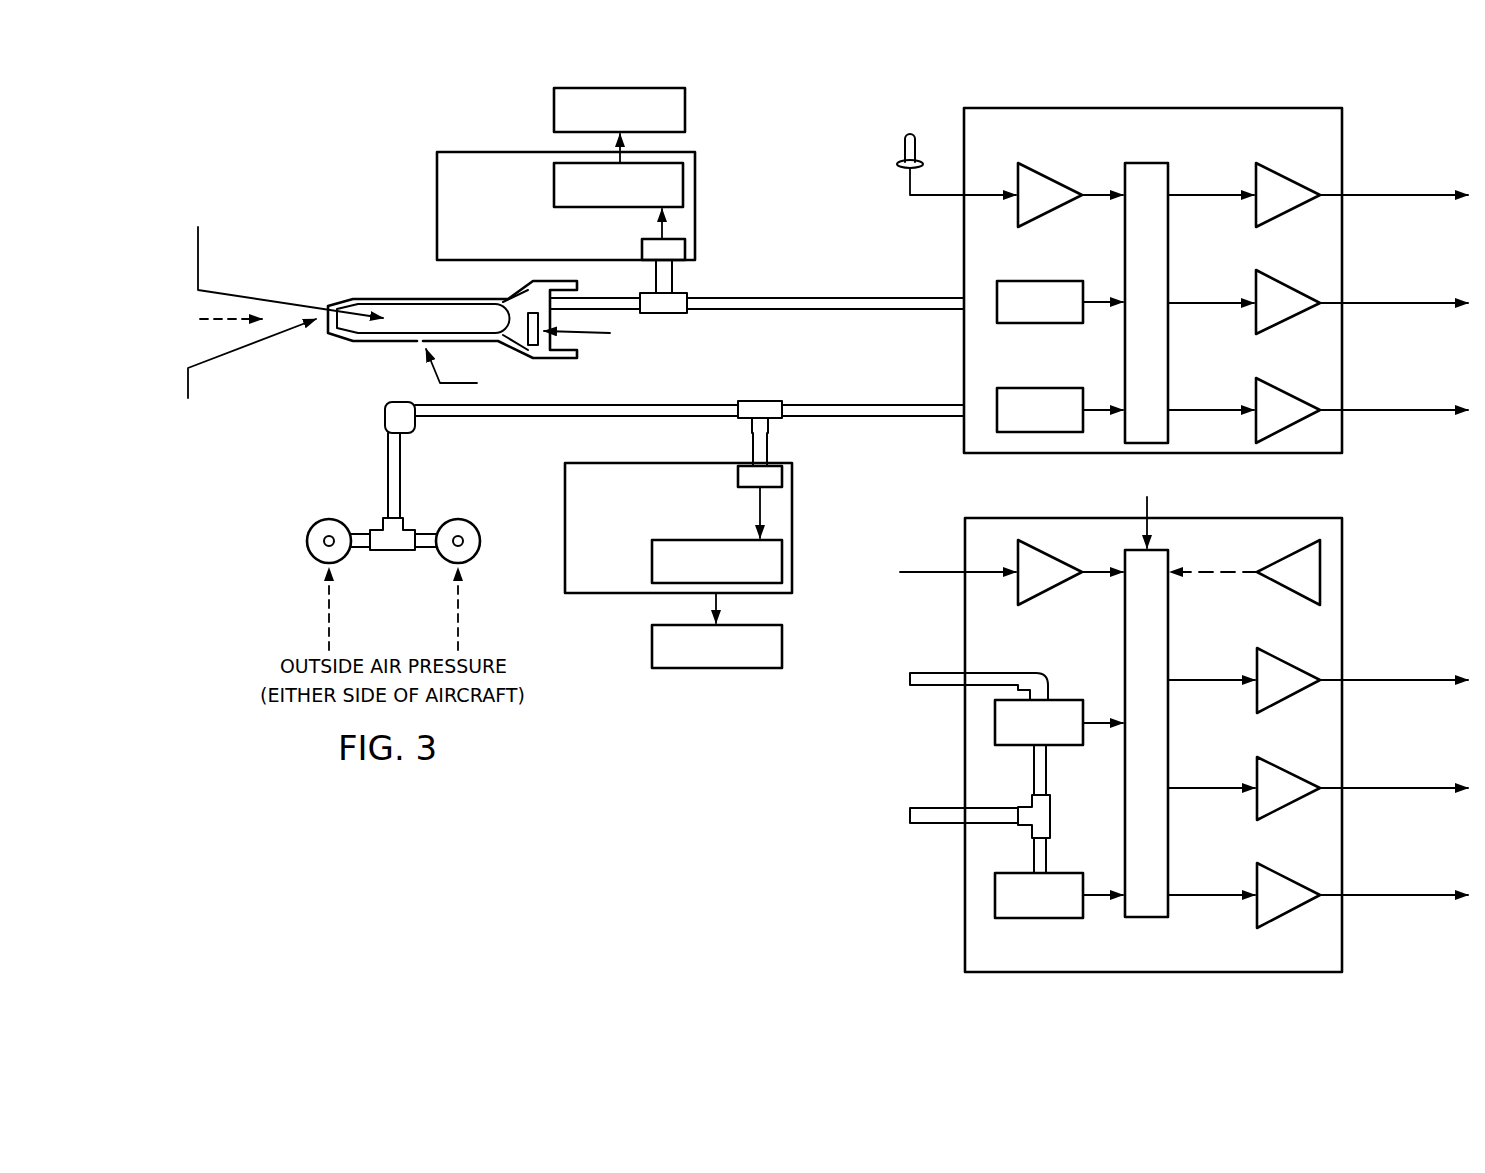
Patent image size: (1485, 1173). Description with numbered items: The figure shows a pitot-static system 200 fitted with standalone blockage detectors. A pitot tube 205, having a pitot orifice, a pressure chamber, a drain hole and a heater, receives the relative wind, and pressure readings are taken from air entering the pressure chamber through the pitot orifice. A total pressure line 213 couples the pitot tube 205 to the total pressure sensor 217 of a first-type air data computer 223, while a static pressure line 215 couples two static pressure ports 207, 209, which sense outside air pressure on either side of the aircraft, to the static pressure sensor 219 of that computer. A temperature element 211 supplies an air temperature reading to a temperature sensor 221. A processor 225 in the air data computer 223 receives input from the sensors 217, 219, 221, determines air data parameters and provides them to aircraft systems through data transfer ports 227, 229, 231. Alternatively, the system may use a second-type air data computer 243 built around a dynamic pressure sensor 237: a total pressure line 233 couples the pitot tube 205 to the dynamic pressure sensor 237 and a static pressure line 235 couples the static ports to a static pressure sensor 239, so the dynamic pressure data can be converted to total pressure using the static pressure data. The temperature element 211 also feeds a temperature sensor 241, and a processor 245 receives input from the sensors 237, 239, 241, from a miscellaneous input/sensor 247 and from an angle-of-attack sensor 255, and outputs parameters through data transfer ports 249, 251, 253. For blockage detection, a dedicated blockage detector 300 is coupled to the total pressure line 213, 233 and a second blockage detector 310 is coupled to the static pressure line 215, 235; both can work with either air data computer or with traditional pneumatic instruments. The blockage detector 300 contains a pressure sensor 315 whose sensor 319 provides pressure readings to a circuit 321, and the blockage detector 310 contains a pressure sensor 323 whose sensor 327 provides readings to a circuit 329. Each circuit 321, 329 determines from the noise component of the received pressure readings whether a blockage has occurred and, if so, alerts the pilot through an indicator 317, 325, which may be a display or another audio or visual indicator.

The pitot-static system 200 is at (198, 132).
The pitot tube 205 is at (337, 336).
The static pressure port 207 is at (307, 540).
The static pressure port 209 is at (473, 559).
The temperature element 211 is at (905, 160).
The total pressure line 213 is at (795, 311).
The static pressure line 215 is at (401, 476).
The total pressure sensor 217 is at (1010, 324).
The static pressure sensor 219 is at (1060, 388).
The temperature sensor 221 is at (1040, 216).
The air data computer 223 is at (1345, 148).
The processor 225 is at (1169, 235).
The data transfer port 227 is at (1256, 182).
The data transfer port 229 is at (1256, 290).
The data transfer port 231 is at (1256, 398).
The total pressure line 233 is at (930, 687).
The static pressure line 235 is at (930, 825).
The dynamic pressure sensor 237 is at (1010, 746).
The static pressure sensor 239 is at (1066, 872).
The temperature sensor 241 is at (1040, 594).
The air data computer 243 is at (1345, 932).
The processor 245 is at (1169, 722).
The miscellaneous input/sensor 247 is at (1283, 590).
The data transfer port 249 is at (1257, 668).
The data transfer port 251 is at (1257, 776).
The data transfer port 253 is at (1257, 883).
The AOA sensor 255 is at (1148, 500).
The blockage detector 300 is at (413, 140).
The blockage detector (static pressure) 310 is at (592, 700).
The pressure sensor 315 is at (696, 195).
The indicator 317 is at (554, 105).
The sensor 319 is at (686, 248).
The blockage detector circuit 321 is at (554, 180).
The pressure sensor 323 is at (565, 528).
The indicator 325 is at (652, 650).
The sensor 327 is at (783, 472).
The blockage detector circuit 329 is at (652, 565).